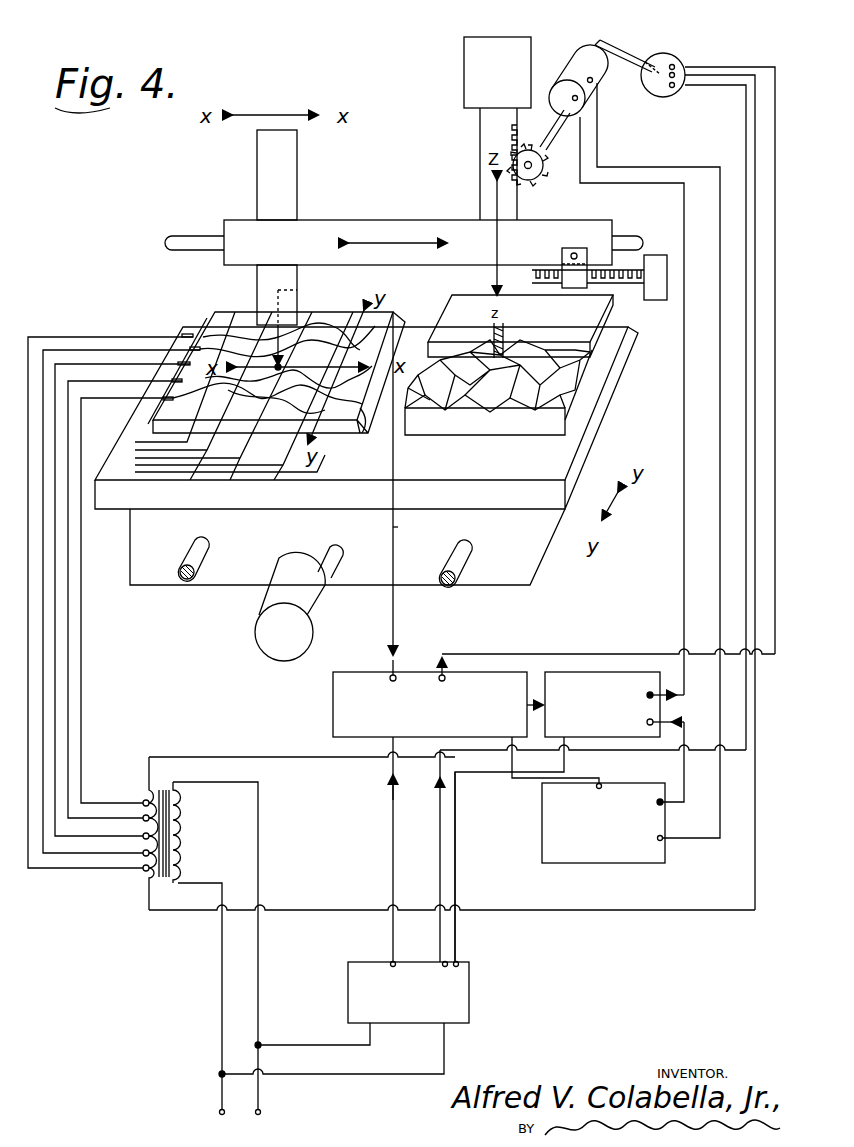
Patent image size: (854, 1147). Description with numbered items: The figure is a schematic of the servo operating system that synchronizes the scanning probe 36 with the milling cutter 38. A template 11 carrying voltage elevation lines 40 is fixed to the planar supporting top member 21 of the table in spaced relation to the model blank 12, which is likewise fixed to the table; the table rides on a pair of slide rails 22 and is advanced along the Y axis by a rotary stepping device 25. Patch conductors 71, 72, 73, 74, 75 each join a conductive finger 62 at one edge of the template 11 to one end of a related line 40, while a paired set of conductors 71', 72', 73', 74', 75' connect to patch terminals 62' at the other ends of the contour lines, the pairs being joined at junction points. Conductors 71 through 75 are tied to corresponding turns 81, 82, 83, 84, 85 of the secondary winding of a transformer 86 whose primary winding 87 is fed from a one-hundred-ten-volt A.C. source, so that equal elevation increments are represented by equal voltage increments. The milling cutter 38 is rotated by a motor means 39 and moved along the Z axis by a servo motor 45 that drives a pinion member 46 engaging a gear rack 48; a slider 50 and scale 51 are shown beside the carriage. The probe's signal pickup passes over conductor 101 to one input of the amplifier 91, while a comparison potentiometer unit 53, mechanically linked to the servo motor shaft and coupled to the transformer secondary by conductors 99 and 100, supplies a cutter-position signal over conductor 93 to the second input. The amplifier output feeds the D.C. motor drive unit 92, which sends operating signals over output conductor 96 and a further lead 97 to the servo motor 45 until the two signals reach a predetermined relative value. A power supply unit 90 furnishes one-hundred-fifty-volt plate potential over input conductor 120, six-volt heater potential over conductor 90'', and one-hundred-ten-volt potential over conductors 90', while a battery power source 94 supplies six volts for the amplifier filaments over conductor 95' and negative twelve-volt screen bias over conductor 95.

The template 11 is at (212, 310).
The model blank 12 is at (582, 322).
The planar supporting top member 21 is at (428, 487).
The slide rails 22 is at (202, 556).
The rotary stepping device 25 is at (270, 628).
The sensing probe 36 is at (265, 188).
The milling cutter 38 is at (504, 356).
The motor means 39 is at (464, 52).
The voltage elevation lines 40 is at (284, 364).
The servo motor 45 is at (578, 58).
The pinion member 46 is at (532, 183).
The gear rack 48 is at (515, 130).
The slider 50 is at (654, 255).
The scale 51 is at (622, 290).
The comparison potentiometer unit 53 is at (672, 58).
The conductive finger 62 is at (247, 347).
The patch terminals 62' is at (373, 433).
The patch conductor 71 is at (110, 588).
The patch conductor 72 is at (121, 580).
The patch conductor 73 is at (122, 572).
The patch conductor 74 is at (125, 599).
The patch conductor 75 is at (127, 600).
The paired conductor 71' is at (246, 480).
The paired conductor 72' is at (244, 408).
The paired conductor 73' is at (223, 408).
The paired conductor 74' is at (203, 408).
The paired conductor 75' is at (185, 377).
The secondary winding turn 81 is at (143, 882).
The secondary winding turn 82 is at (146, 855).
The secondary winding turn 83 is at (146, 838).
The secondary winding turn 84 is at (146, 818).
The secondary winding turn 85 is at (146, 801).
The transformer 86 is at (166, 775).
The primary winding 87 is at (185, 843).
The power supply unit 90 is at (386, 976).
The conductors 90' is at (482, 867).
The conductor 90'' is at (423, 856).
The amplifier 91 is at (333, 716).
The D.C. motor drive unit 92 is at (655, 683).
The conductor 93 is at (452, 654).
The power source 94 is at (572, 863).
The conductor 95 is at (661, 762).
The conductor 95' is at (527, 849).
The output conductor 96 is at (684, 618).
The motor lead 97 is at (720, 524).
The conductor 99 is at (738, 757).
The conductor 100 is at (720, 912).
The conductor 101 is at (393, 623).
The input conductor 120 is at (393, 818).